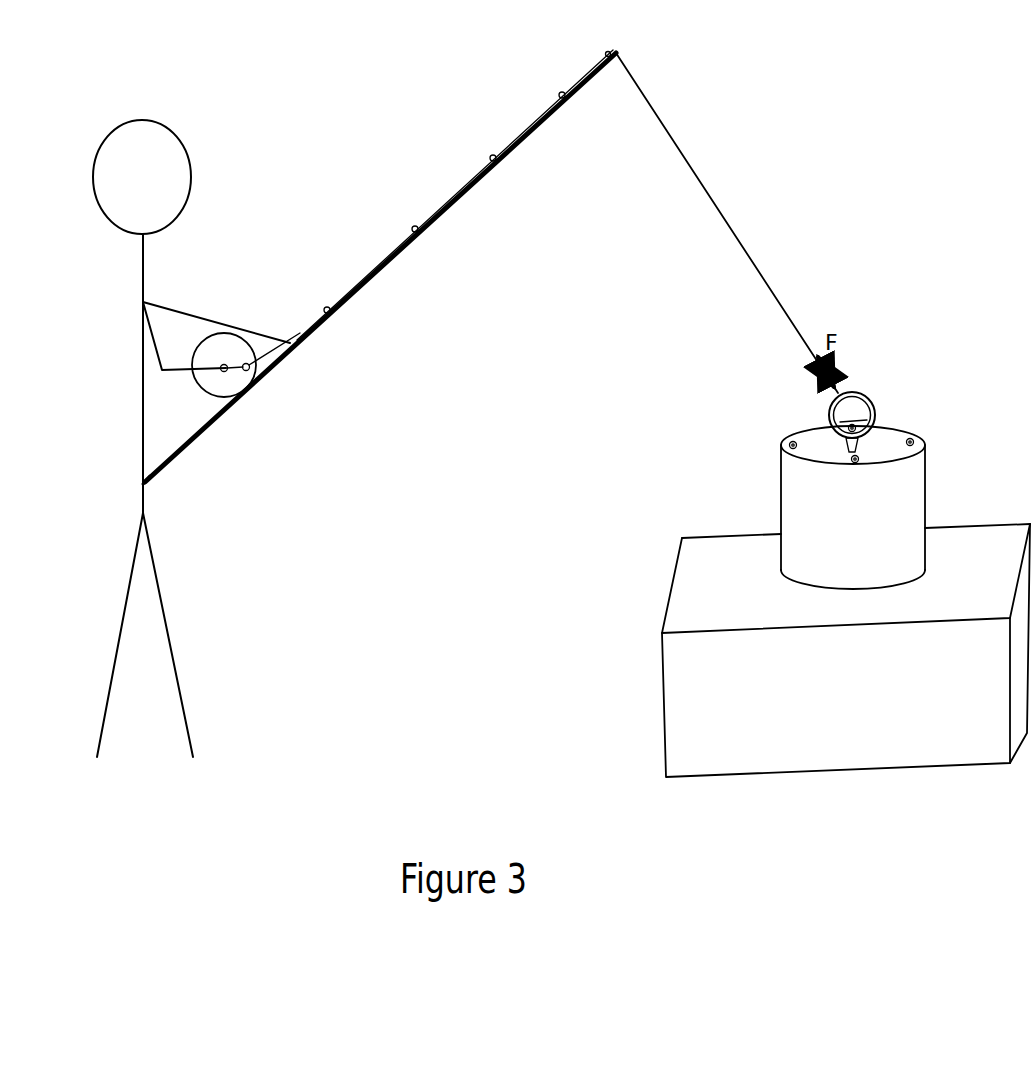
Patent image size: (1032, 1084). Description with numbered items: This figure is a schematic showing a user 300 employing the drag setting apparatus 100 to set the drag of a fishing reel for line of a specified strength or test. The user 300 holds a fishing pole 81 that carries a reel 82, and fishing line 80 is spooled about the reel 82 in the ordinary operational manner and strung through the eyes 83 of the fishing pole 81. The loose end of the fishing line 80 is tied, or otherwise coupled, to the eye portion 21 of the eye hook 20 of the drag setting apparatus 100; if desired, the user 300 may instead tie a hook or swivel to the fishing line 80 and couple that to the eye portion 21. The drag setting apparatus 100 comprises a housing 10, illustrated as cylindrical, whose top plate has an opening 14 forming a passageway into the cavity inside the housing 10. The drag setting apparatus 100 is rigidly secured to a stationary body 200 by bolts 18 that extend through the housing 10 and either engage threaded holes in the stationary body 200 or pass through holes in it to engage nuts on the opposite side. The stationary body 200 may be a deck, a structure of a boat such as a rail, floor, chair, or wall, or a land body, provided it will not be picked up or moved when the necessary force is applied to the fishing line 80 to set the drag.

The user 300 is at (190, 141).
The reel 82 is at (224, 341).
The fishing pole 81 is at (367, 282).
The eyes 83 is at (326, 306).
The fishing line 80 is at (777, 297).
The drag setting apparatus 100 is at (727, 397).
The cylindrical housing 10 is at (930, 506).
The opening 14 is at (848, 448).
The eye hook 20 is at (877, 421).
The eye portion 21 is at (840, 402).
The bolts 18 is at (944, 412).
The stationary body 200 is at (688, 600).